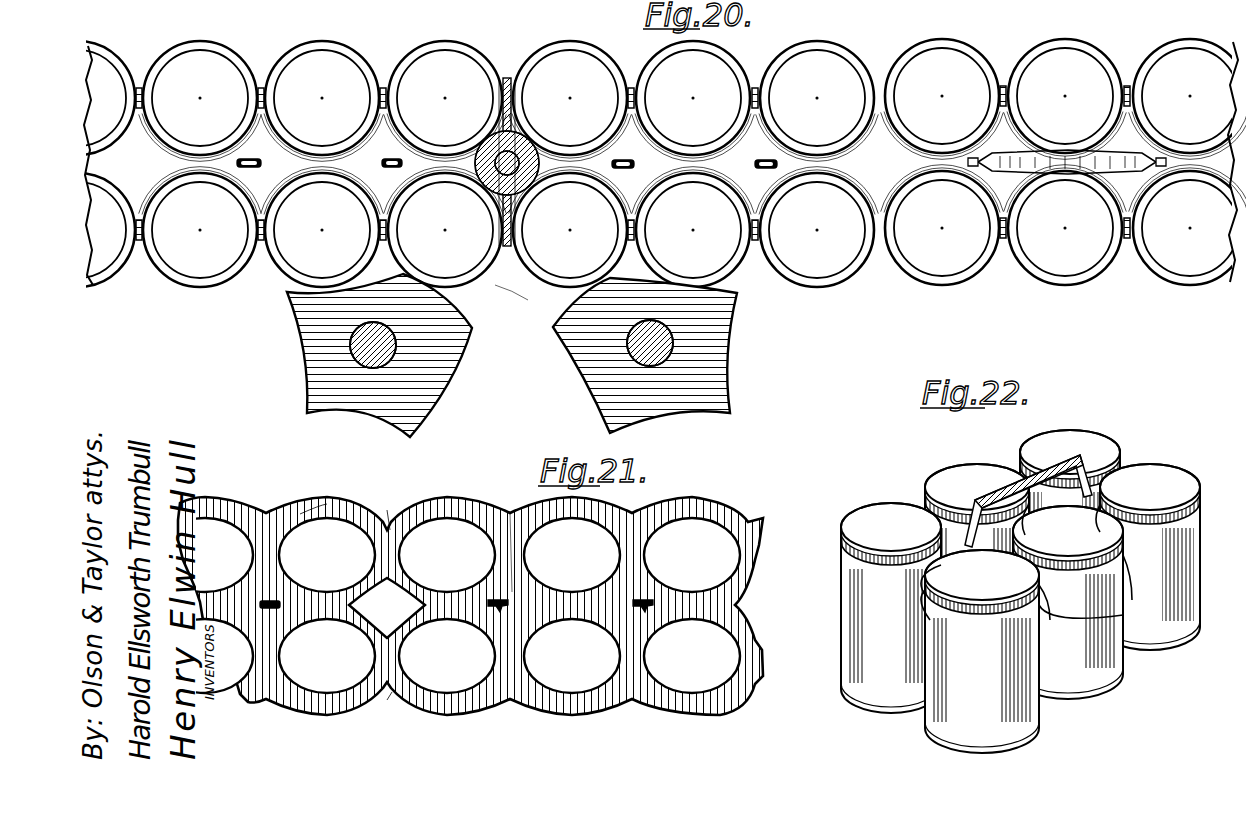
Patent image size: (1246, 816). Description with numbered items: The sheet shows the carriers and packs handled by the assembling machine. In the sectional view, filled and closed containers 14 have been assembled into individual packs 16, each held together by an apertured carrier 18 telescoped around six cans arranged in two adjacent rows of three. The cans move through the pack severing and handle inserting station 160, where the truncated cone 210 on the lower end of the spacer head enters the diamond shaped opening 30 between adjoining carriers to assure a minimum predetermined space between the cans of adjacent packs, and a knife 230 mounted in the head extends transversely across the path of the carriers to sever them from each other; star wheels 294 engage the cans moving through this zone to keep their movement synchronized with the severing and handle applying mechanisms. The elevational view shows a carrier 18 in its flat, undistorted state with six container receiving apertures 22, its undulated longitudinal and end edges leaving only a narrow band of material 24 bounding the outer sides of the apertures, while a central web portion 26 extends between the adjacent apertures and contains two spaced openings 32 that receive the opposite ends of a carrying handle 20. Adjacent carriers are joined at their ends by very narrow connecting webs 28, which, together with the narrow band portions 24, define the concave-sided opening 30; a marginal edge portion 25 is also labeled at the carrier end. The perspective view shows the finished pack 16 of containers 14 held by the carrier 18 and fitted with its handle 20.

In FIG. 22, the containers 14 is at (1098, 747).
In FIG. 20, the pack 16 is at (1127, 273).
In FIG. 21, the pack 16 is at (470, 606).
In FIG. 22, the pack 16 is at (1134, 450).
In FIG. 20, the carrier 18 is at (262, 78).
In FIG. 21, the carrier 18 is at (265, 535).
In FIG. 20, the carrying handle 20 is at (1130, 160).
In FIG. 22, the carrying handle 20 is at (1056, 468).
In FIG. 21, the container receiving aperture 22 is at (649, 549).
In FIG. 21, the band of material 24 is at (443, 505).
In FIG. 21, the end web 25 is at (741, 634).
In FIG. 21, the central web portion 26 is at (512, 594).
In FIG. 20, the connecting web 28 is at (520, 80).
In FIG. 21, the connecting web 28 is at (392, 535).
In FIG. 21, the diamond shaped opening 30 is at (362, 613).
In FIG. 20, the openings 32 is at (264, 154).
In FIG. 21, the openings 32 is at (500, 609).
In FIG. 20, the pack severing and handle inserting station 160 is at (518, 332).
In FIG. 20, the truncated cone 210 is at (541, 162).
In FIG. 20, the knife 230 is at (507, 76).
In FIG. 20, the star wheel 294 is at (324, 381).